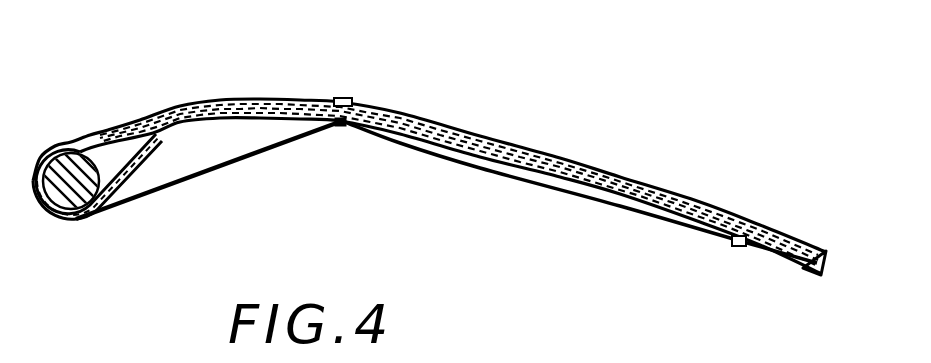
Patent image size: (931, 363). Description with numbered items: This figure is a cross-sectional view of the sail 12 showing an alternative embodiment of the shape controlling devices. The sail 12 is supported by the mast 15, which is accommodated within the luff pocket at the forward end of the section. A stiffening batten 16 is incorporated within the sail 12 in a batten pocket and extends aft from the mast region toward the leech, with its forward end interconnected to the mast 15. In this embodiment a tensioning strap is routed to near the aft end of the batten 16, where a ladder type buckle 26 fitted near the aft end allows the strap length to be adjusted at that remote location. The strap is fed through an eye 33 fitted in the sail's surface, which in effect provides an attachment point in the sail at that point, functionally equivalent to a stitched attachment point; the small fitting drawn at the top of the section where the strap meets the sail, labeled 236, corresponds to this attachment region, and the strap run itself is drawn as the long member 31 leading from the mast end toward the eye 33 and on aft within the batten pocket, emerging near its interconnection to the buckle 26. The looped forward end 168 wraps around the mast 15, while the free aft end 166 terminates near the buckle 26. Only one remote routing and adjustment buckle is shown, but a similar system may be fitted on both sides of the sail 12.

The sail 12 is at (527, 133).
The mast 15 is at (67, 219).
The batten 16 is at (656, 186).
The loop end of web 168 is at (108, 131).
The free end of web 166 is at (816, 247).
The brace rod 31 is at (226, 170).
The eye 33 is at (340, 124).
The clip 236 is at (340, 99).
The ladder type buckle 26 is at (739, 247).